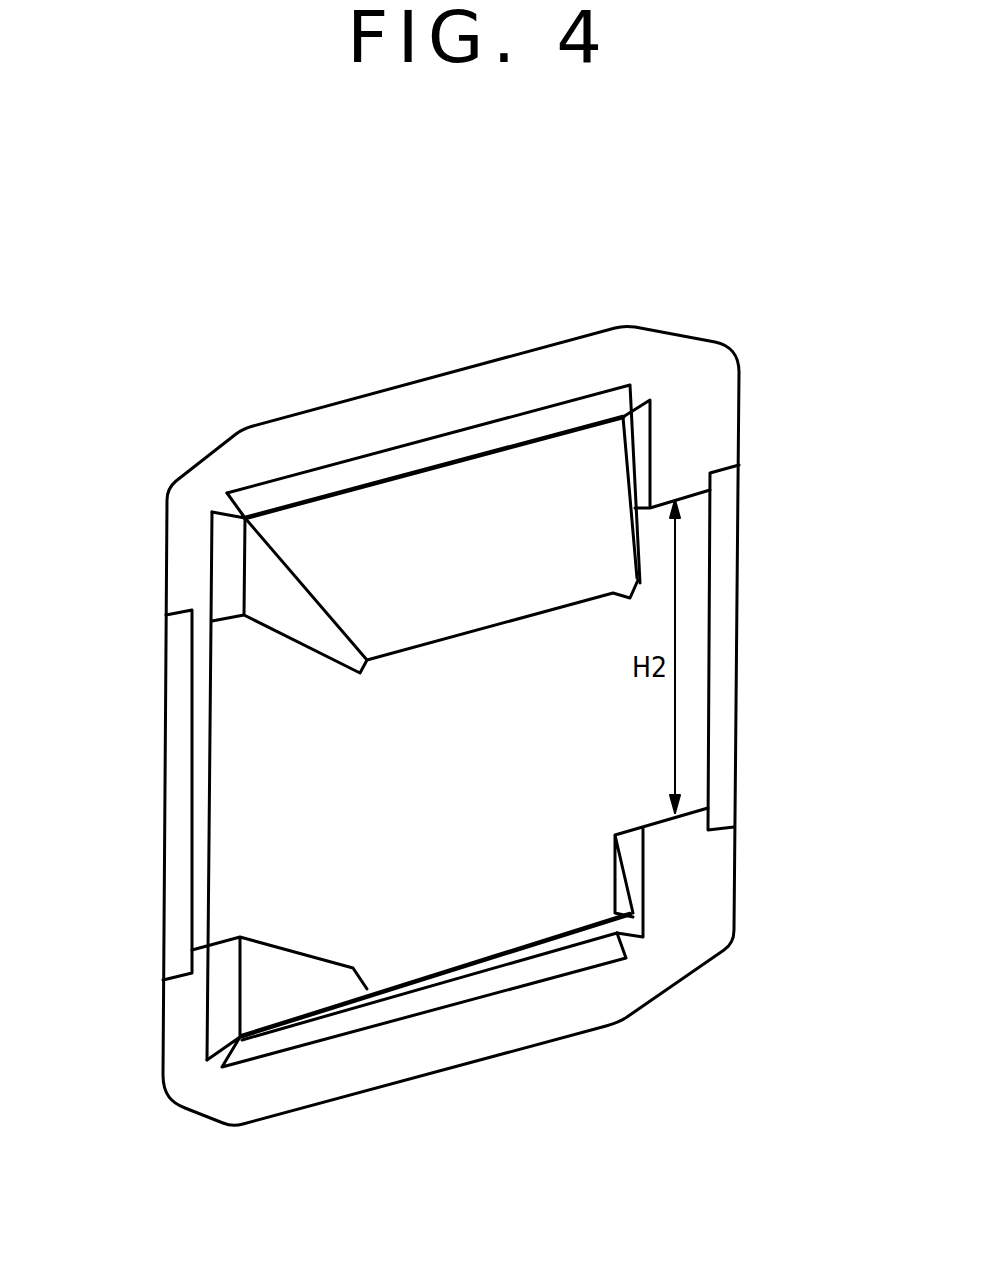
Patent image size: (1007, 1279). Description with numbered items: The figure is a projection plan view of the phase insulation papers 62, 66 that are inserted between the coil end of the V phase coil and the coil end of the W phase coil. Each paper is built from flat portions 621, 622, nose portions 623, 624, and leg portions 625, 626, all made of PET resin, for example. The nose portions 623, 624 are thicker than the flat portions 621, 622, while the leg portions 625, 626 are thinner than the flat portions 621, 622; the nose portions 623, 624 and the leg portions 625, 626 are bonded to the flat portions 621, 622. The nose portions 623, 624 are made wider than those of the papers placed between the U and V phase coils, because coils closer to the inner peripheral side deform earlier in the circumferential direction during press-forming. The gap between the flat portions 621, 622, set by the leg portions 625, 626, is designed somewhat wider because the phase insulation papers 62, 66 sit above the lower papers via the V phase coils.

The phase insulation paper 62 is at (190, 319).
The phase insulation paper 66 is at (413, 701).
The flat portion 621 is at (708, 397).
The flat portion 622 is at (680, 947).
The nose portion 623 is at (388, 507).
The nose portion 624 is at (302, 990).
The leg portion 625 is at (722, 652).
The leg portion 626 is at (172, 832).